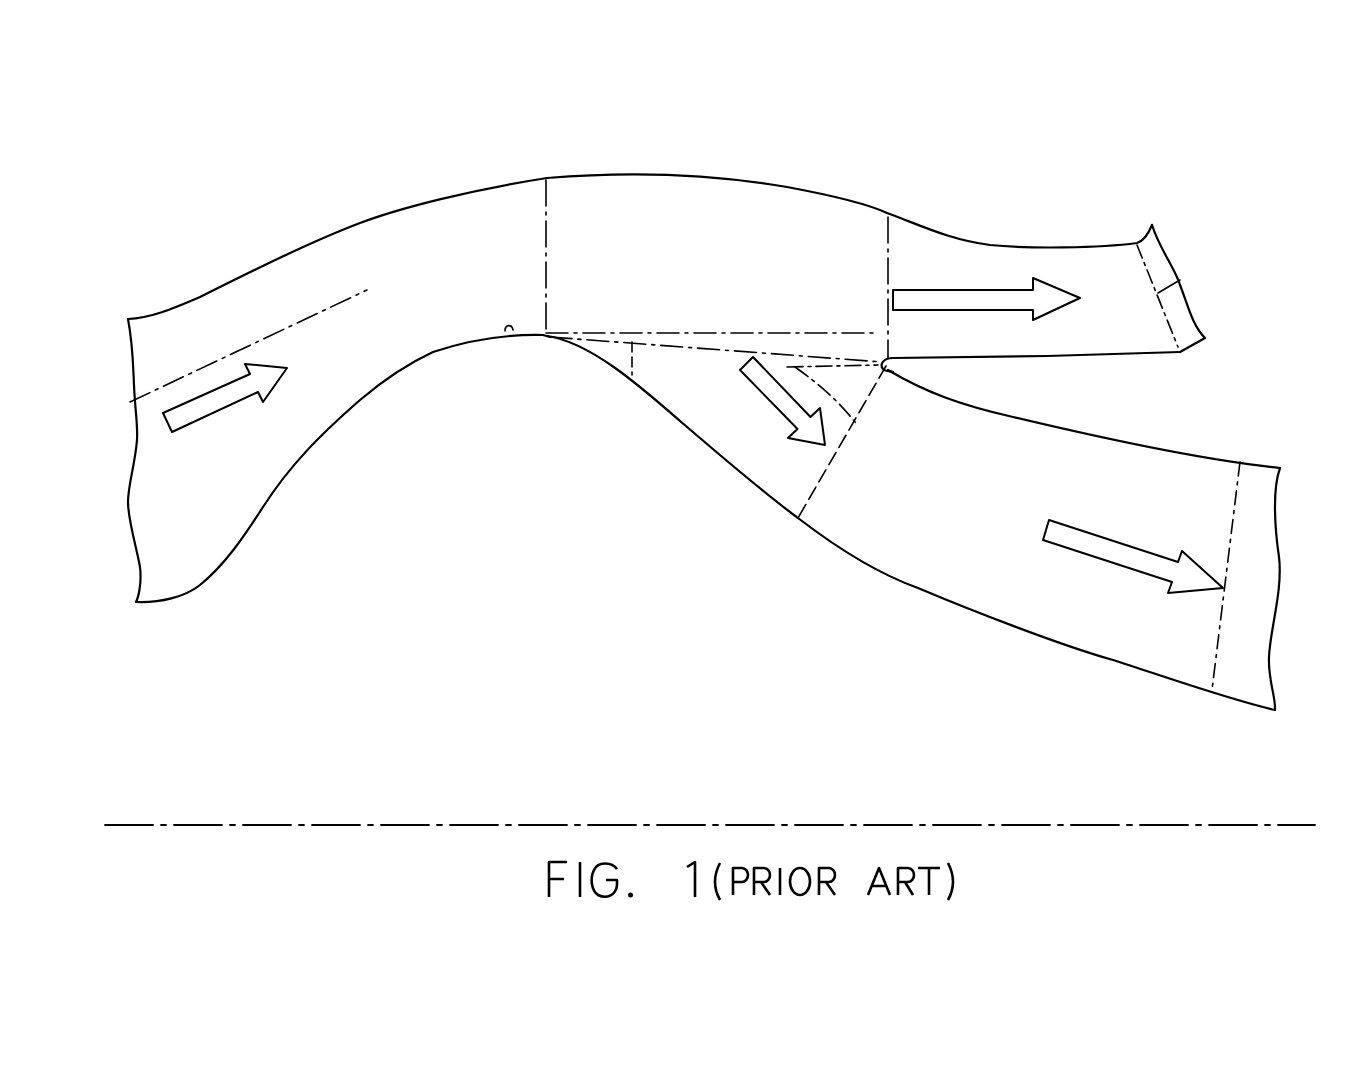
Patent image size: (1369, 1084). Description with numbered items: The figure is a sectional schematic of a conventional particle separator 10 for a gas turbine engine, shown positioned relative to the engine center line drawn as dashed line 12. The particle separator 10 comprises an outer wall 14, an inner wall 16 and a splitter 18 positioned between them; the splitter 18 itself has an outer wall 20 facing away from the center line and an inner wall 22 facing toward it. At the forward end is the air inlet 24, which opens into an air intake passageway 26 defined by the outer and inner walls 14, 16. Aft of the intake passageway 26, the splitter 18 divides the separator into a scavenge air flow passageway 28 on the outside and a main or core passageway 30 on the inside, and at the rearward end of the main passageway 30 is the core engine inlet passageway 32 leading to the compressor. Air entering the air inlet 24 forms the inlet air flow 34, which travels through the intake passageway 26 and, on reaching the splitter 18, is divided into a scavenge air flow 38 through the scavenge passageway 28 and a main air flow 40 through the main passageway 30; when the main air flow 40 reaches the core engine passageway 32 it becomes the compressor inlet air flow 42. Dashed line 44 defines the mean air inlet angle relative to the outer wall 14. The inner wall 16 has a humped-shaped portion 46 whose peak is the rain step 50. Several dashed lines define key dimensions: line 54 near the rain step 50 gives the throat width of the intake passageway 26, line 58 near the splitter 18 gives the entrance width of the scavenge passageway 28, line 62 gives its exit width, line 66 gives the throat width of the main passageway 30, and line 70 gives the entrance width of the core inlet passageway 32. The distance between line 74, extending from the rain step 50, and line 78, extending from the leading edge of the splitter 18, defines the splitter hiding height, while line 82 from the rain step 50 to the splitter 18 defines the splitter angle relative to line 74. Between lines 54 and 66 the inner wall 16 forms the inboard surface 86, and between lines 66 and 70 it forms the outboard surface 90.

The particle separator 10 is at (371, 150).
The engine center line 12 is at (455, 822).
The outer wall 14 is at (496, 184).
The inner wall 16 is at (510, 330).
The splitter 18 is at (1025, 388).
The splitter outer wall 20 is at (1132, 352).
The splitter inner wall 22 is at (1113, 440).
The air inlet 24 is at (172, 461).
The air intake passageway 26 is at (476, 297).
The scavenge air flow passageway 28 is at (1095, 282).
The main passageway 30 is at (787, 460).
The core engine inlet passageway 32 is at (1245, 534).
The inlet air flow 34 is at (202, 410).
The scavenge air flow 38 is at (987, 298).
The main air flow 40 is at (767, 390).
The compressor inlet air flow 42 is at (1117, 560).
The mean air inlet angle line 44 is at (307, 317).
The humped-shaped portion 46 is at (498, 478).
The rain step 50 is at (552, 347).
The throat width line 54 is at (550, 222).
The scavenge entrance width line 58 is at (887, 245).
The scavenge exit width line 62 is at (1180, 279).
The main passageway throat width line 66 is at (827, 477).
The core inlet entrance width line 70 is at (1218, 628).
The rain step reference line 74 is at (713, 333).
The splitter leading edge line 78 is at (858, 426).
The splitter angle line 82 is at (630, 377).
The inboard surface 86 is at (680, 423).
The outboard surface 90 is at (920, 588).